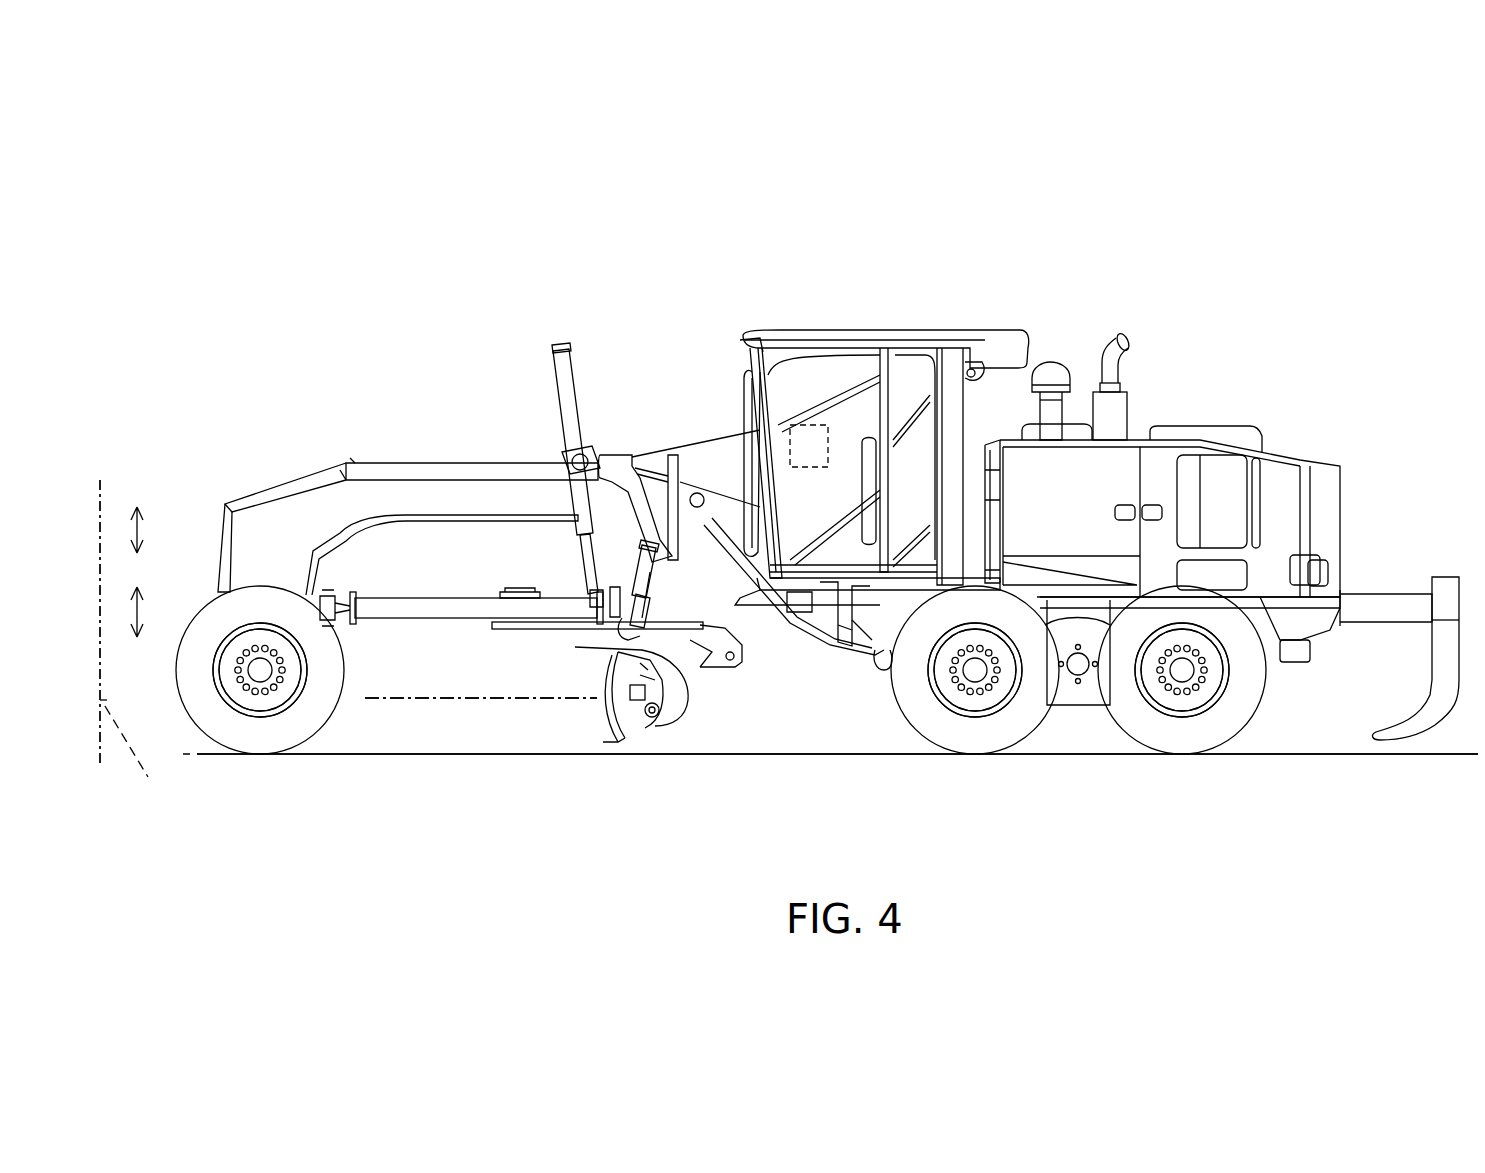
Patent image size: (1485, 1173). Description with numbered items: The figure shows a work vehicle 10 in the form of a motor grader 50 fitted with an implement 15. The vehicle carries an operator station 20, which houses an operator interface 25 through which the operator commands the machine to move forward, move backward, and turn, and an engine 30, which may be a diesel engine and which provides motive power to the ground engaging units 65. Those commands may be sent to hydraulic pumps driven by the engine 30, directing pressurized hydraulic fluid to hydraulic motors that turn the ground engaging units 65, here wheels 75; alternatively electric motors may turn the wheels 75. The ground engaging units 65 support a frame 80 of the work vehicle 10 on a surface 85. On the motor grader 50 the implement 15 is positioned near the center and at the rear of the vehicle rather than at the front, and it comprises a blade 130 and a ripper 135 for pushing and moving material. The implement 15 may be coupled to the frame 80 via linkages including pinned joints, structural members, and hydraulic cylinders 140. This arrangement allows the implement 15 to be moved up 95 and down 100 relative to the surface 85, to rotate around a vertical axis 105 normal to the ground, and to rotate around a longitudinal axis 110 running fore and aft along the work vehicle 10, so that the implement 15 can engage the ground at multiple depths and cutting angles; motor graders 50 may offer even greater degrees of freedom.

The work vehicle 10 is at (937, 172).
The implement 15 is at (614, 762).
The operator station 20 is at (812, 330).
The operator interface 25 is at (796, 424).
The engine 30 is at (1117, 478).
The motor grader 50 is at (992, 235).
The ground engaging units 65 is at (236, 760).
The wheels 75 is at (278, 726).
The frame 80 is at (838, 640).
The surface 85 is at (456, 760).
The up 95 is at (138, 527).
The down 100 is at (175, 594).
The vertical axis 105 is at (149, 644).
The longitudinal axis 110 is at (515, 703).
The blade 130 is at (616, 760).
The ripper 135 is at (1444, 580).
The hydraulic cylinders 140 is at (565, 397).